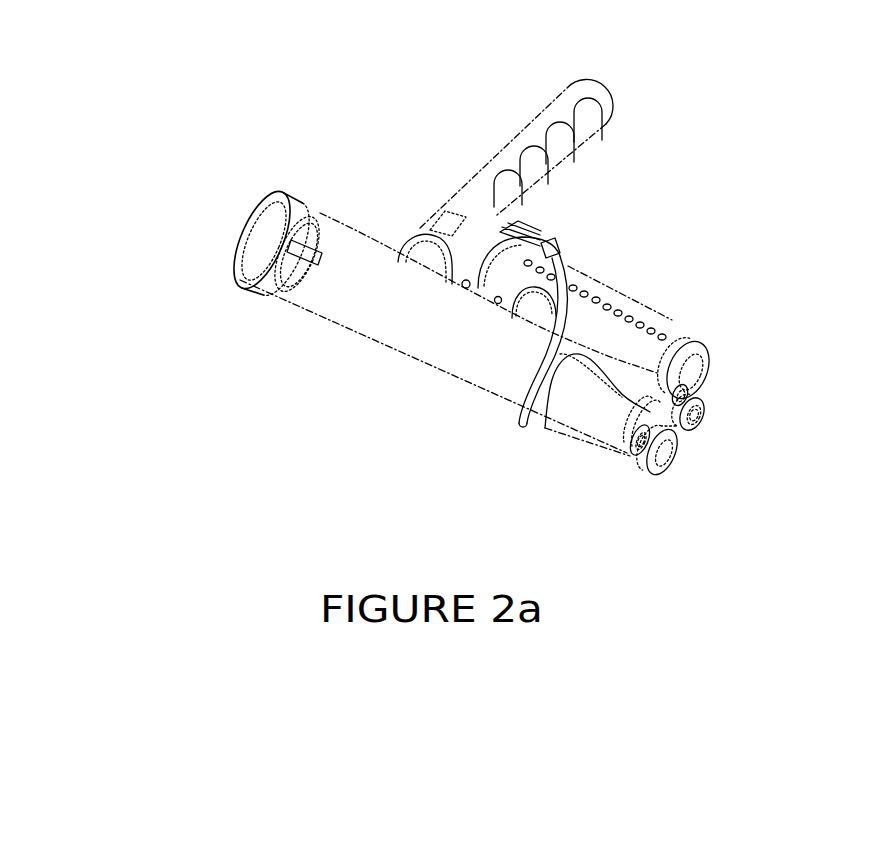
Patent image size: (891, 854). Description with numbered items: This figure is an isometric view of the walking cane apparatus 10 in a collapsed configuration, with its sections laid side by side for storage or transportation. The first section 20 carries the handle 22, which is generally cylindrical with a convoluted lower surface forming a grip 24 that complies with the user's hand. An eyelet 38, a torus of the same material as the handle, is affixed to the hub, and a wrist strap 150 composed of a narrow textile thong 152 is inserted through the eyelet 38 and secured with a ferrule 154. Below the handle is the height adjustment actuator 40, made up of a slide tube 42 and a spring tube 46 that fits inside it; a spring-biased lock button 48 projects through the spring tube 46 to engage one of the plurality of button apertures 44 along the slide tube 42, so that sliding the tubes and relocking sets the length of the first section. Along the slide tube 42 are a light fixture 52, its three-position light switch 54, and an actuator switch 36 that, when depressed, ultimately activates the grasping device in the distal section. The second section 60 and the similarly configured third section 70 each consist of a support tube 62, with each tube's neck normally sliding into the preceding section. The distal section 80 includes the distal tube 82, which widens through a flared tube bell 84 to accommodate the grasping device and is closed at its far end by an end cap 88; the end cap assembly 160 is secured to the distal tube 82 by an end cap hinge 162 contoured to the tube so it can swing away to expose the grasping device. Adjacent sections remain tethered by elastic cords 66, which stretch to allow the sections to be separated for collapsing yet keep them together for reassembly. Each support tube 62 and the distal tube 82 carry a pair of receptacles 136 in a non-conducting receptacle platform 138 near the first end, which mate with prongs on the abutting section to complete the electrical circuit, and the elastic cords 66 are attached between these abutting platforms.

The walking cane apparatus 10 is at (172, 118).
The first section 20 is at (677, 197).
The handle 22 is at (545, 120).
The grip 24 is at (590, 123).
The actuator switch 36 is at (461, 281).
The eyelet 38 is at (504, 232).
The height adjustment actuator 40 is at (647, 312).
The slide tube 42 is at (614, 301).
The button apertures 44 is at (667, 338).
The spring tube 46 is at (690, 347).
The lock button 48 is at (531, 263).
The light fixture 52 is at (523, 312).
The light switch 54 is at (497, 304).
The second section 60 is at (772, 437).
The support tube 62 is at (702, 410).
The elastic cord 66 is at (693, 393).
The third section 70 is at (703, 525).
The distal section 80 is at (338, 370).
The distal tube 82 is at (398, 338).
The tube bell 84 is at (555, 425).
The end cap 88 is at (285, 193).
The receptacles 136 is at (690, 418).
The receptacle platform 138 is at (683, 433).
The wrist strap 150 is at (472, 453).
The thong 152 is at (528, 408).
The ferrule 154 is at (556, 243).
The end cap assembly 160 is at (198, 315).
The end cap hinge 162 is at (282, 280).